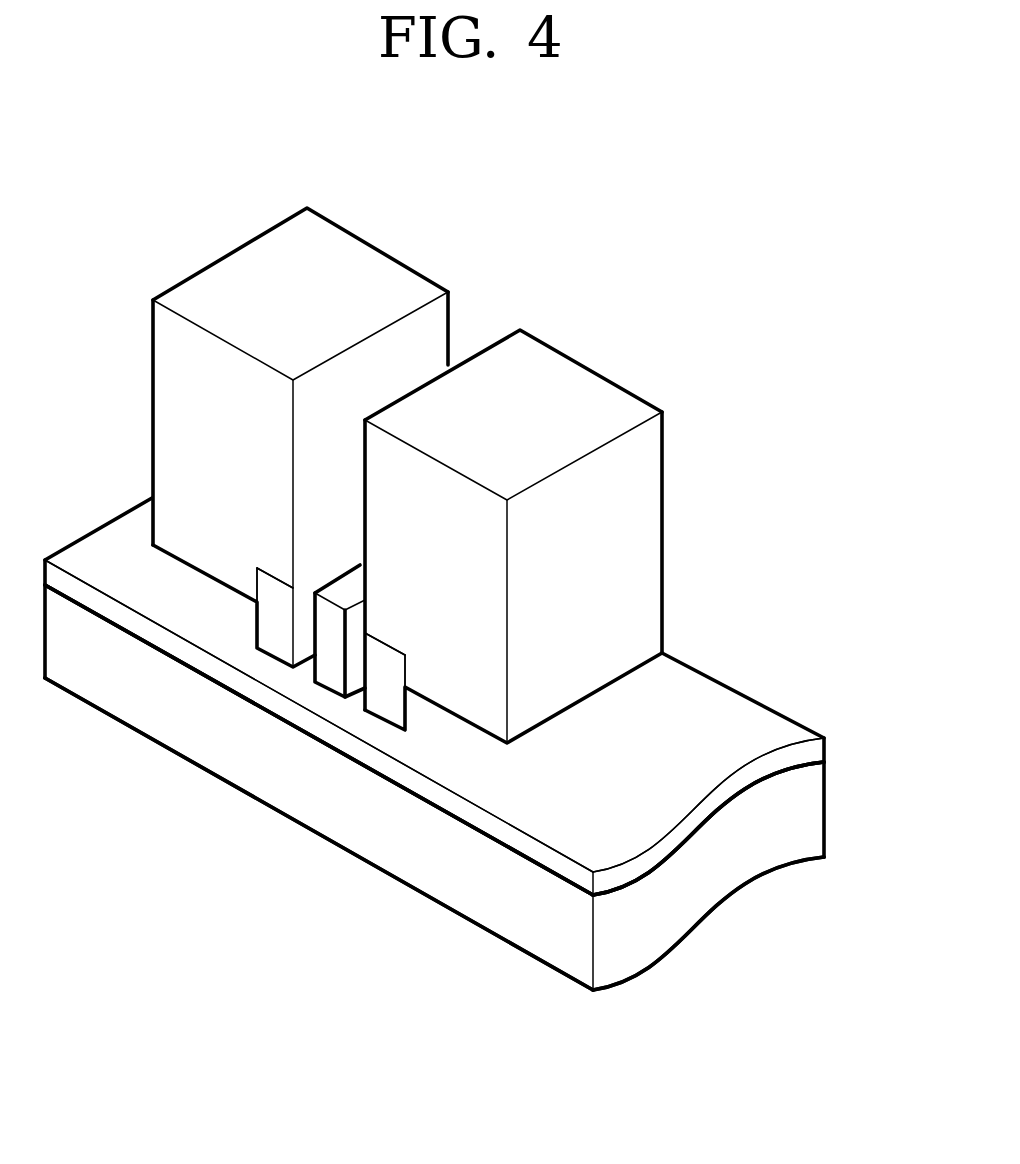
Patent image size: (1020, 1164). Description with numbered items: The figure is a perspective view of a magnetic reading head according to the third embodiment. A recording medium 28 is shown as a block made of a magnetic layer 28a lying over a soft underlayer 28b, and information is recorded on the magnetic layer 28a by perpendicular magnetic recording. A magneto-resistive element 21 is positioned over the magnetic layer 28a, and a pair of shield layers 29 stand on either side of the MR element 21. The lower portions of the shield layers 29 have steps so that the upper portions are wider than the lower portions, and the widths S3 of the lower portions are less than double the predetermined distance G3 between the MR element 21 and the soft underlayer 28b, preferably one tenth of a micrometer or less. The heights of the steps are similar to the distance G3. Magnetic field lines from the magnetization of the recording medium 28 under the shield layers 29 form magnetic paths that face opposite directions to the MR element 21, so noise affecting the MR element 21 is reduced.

The recording medium 28 is at (812, 682).
The magnetic layer 28a is at (813, 753).
The soft underlayer 28b is at (813, 813).
The shield layers 29 is at (375, 270).
The magneto-resistive element 21 is at (325, 643).
The widths of the lower portions S3 is at (331, 616).
The predetermined distance G3 is at (328, 689).